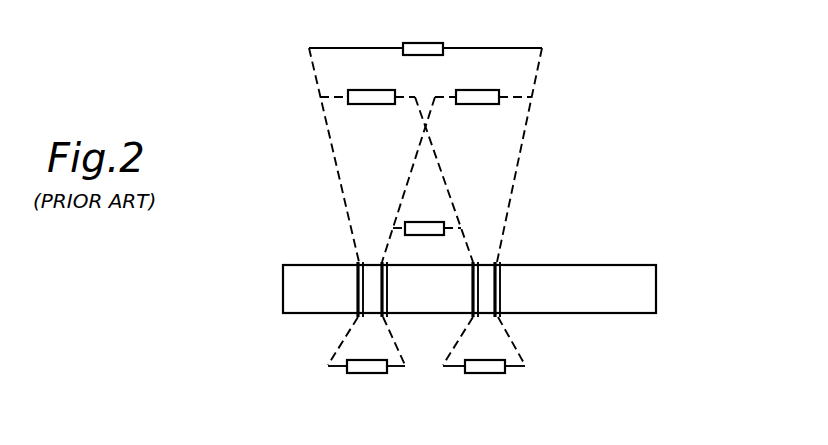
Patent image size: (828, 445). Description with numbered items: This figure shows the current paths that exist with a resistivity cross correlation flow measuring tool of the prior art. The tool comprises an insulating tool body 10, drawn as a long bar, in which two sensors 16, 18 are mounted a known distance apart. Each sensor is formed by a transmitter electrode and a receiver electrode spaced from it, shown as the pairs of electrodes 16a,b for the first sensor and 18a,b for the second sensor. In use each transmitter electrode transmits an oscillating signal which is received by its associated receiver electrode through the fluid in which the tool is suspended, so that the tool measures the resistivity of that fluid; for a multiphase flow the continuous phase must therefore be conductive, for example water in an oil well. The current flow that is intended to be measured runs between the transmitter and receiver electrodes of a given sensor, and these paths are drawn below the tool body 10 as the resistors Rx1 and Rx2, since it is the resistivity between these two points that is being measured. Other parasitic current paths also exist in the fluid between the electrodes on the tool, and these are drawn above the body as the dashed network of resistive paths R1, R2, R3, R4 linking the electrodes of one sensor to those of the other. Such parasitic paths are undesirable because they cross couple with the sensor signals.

The insulating tool body 10 is at (623, 293).
The sensor 16 is at (315, 267).
The transmitter electrode and receiver electrode 16a,b is at (382, 262).
The sensor 18 is at (538, 267).
The transmitter electrode and receiver electrode 18a,b is at (473, 263).
The resistive path R1 is at (427, 215).
The resistive path R2 is at (425, 32).
The resistive path R3 is at (367, 111).
The resistive path R4 is at (483, 111).
The current path Rx1 is at (366, 362).
The current path Rx2 is at (484, 362).